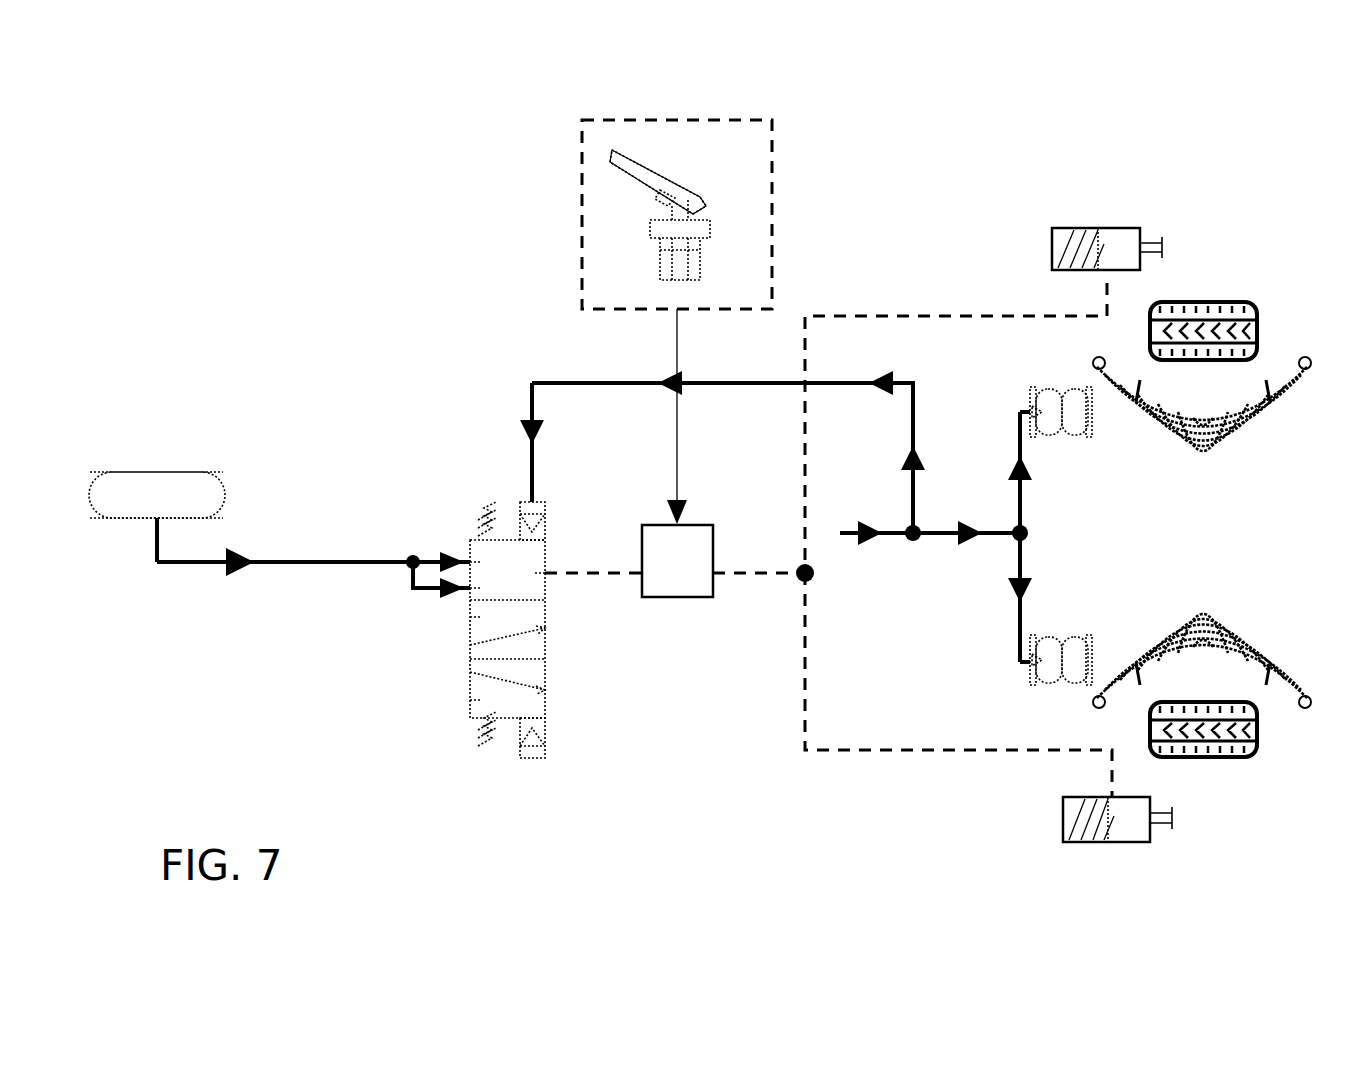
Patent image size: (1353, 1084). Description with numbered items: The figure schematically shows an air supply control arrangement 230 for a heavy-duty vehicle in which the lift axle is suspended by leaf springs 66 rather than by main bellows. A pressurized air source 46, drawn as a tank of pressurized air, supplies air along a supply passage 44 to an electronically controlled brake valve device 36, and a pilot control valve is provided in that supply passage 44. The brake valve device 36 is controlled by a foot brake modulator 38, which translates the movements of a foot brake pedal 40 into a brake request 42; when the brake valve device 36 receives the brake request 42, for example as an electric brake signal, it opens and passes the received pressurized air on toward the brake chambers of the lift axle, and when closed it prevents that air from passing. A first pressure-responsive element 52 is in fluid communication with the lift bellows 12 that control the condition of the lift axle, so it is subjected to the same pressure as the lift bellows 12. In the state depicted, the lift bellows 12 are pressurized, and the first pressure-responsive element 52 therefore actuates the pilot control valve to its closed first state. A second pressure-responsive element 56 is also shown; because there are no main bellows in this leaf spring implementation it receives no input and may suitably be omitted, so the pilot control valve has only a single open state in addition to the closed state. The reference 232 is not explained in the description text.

The air supply control arrangement 230 is at (283, 252).
The pressurized air source 46 is at (143, 472).
The supply passage 44 is at (323, 562).
The first pressure-responsive element 52 is at (520, 500).
The second pressure-responsive element 56 is at (520, 752).
The directional control valve 232 is at (470, 672).
The electronically controlled brake valve device 36 is at (677, 548).
The brake request 42 is at (676, 333).
The foot brake pedal 40 is at (655, 172).
The foot brake modulator 38 is at (700, 263).
The lift bellows 12 is at (1092, 415).
The leaf springs 66 is at (1213, 425).